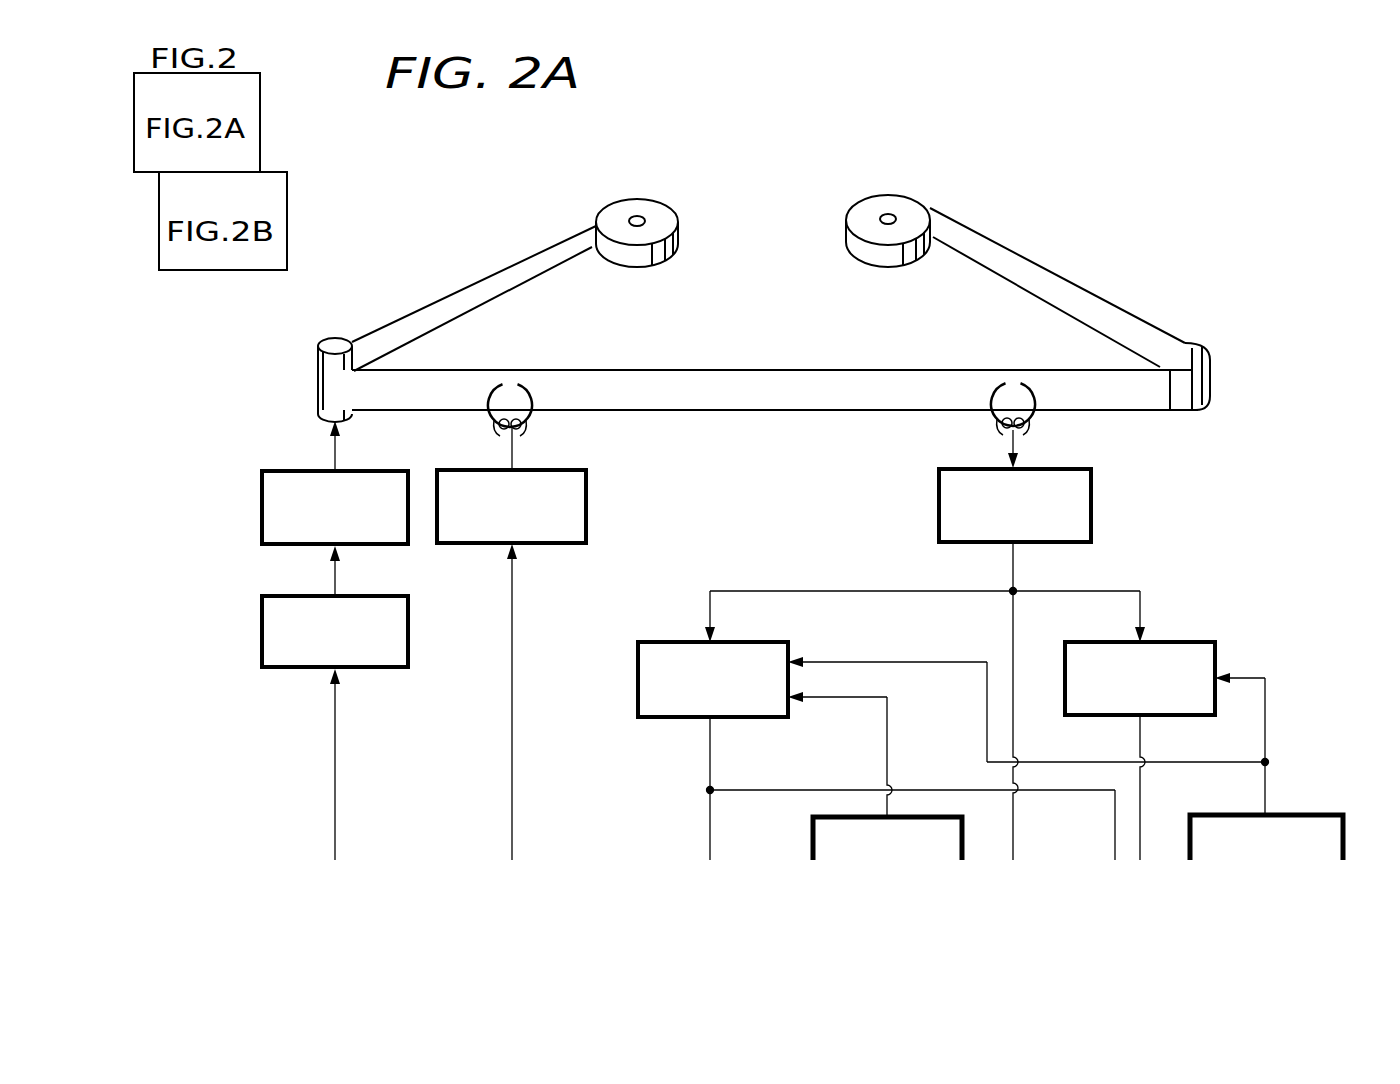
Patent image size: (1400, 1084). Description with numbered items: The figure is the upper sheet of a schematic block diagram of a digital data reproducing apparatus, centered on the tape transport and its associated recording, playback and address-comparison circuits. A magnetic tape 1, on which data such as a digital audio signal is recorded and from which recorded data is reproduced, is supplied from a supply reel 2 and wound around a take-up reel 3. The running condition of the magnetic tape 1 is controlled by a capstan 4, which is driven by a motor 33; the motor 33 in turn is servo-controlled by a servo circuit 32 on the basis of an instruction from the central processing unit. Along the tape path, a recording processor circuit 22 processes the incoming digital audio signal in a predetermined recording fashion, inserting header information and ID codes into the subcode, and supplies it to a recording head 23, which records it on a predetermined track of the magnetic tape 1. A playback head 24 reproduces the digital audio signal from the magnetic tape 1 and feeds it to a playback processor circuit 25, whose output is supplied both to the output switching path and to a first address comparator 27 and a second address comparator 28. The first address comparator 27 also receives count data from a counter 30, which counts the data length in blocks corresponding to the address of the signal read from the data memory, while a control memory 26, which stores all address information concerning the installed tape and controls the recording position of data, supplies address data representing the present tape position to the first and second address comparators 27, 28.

The magnetic tape 1 is at (753, 368).
The supply reel 2 is at (620, 212).
The take-up reel 3 is at (903, 212).
The capstan 4 is at (333, 343).
The recording processor circuit 22 is at (555, 545).
The recording head 23 is at (533, 420).
The playback head 24 is at (1035, 418).
The playback processor circuit 25 is at (1073, 542).
The control memory 26 is at (1308, 815).
The first address comparator 27 is at (637, 682).
The second address comparator 28 is at (1207, 640).
The counter 30 is at (813, 833).
The servo circuit 32 is at (373, 668).
The motor 33 is at (373, 545).